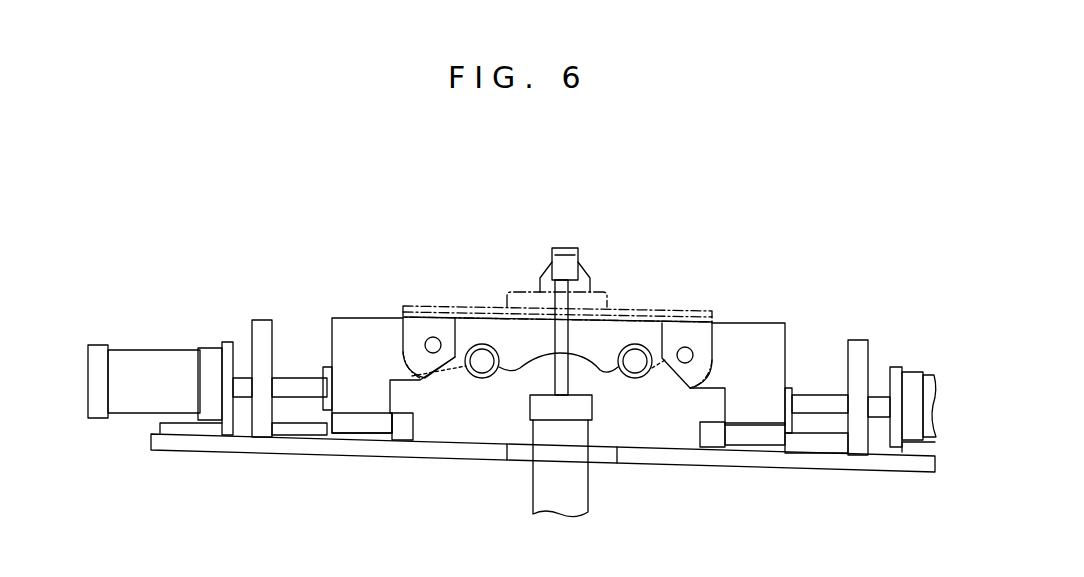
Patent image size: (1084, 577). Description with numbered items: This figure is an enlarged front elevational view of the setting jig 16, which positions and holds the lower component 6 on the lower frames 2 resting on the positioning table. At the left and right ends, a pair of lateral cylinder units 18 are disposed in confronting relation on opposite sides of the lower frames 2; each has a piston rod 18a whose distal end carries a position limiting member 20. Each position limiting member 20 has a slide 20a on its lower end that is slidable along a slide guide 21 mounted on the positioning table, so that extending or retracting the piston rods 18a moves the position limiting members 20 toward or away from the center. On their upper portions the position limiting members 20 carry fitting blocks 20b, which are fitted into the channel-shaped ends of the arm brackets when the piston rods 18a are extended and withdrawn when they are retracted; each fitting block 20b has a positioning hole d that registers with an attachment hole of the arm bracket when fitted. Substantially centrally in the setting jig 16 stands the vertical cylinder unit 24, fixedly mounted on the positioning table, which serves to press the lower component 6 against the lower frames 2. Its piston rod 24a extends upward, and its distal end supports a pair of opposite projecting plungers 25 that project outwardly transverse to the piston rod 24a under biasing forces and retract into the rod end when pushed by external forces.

The setting jig 16 is at (749, 230).
The lateral cylinder units 18 is at (141, 362).
The piston rods 18a is at (300, 385).
The position limiting members 20 is at (361, 332).
The slides 20a is at (365, 422).
The fitting blocks 20b is at (430, 323).
The slide guides 21 is at (307, 428).
The lower frames 2 is at (496, 380).
The lower component 6 is at (497, 306).
The vertical cylinder unit 24 is at (570, 488).
The piston rod 24a is at (568, 337).
The projecting plungers 25 is at (579, 266).
The positioning holes d is at (433, 355).